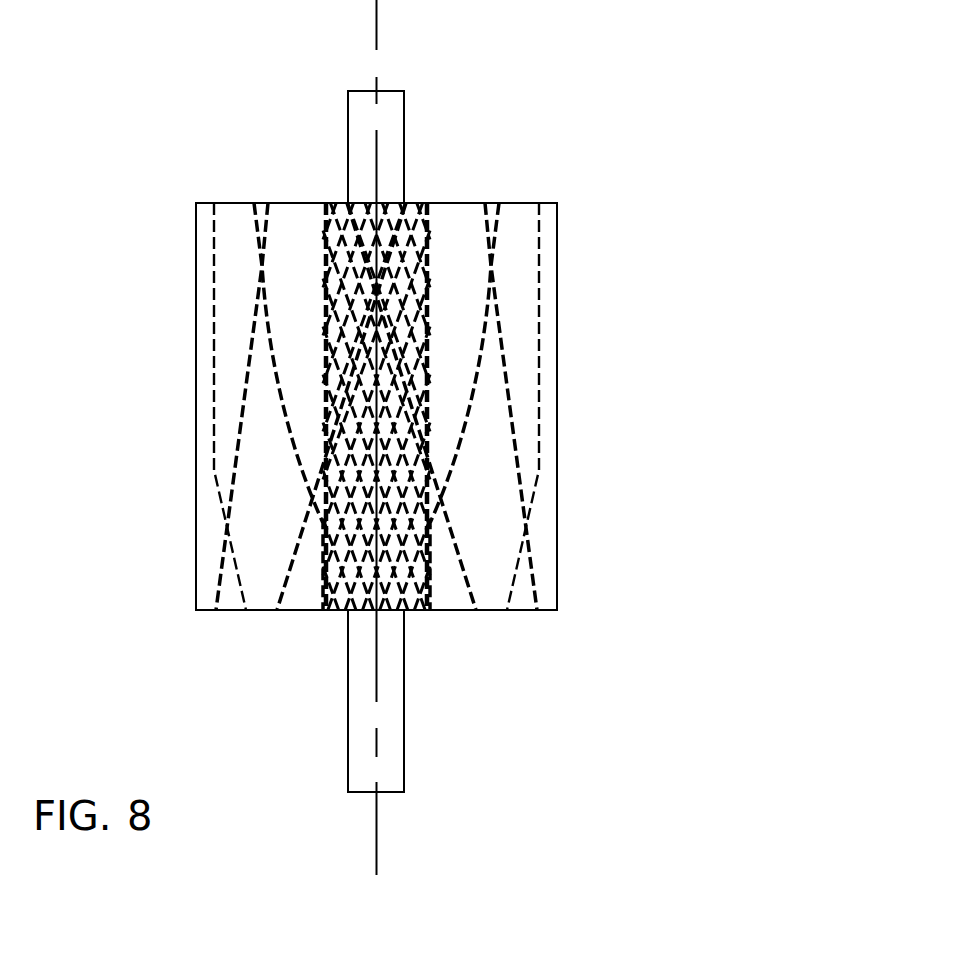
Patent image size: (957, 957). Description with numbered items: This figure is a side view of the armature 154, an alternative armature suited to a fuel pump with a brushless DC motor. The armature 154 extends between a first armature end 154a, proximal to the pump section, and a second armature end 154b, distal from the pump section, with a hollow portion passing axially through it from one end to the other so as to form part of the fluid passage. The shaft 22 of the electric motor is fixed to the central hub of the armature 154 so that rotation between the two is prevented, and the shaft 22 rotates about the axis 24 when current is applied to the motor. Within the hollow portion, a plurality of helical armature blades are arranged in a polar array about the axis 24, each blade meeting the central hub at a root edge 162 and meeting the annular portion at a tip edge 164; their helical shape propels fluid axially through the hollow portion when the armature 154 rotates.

The armature 154 is at (656, 104).
The first armature end 154a is at (518, 610).
The second armature end 154b is at (223, 203).
The shaft 22 is at (387, 129).
The axis 24 is at (377, 833).
The root edge 162 is at (322, 284).
The tip edge 164 is at (285, 412).